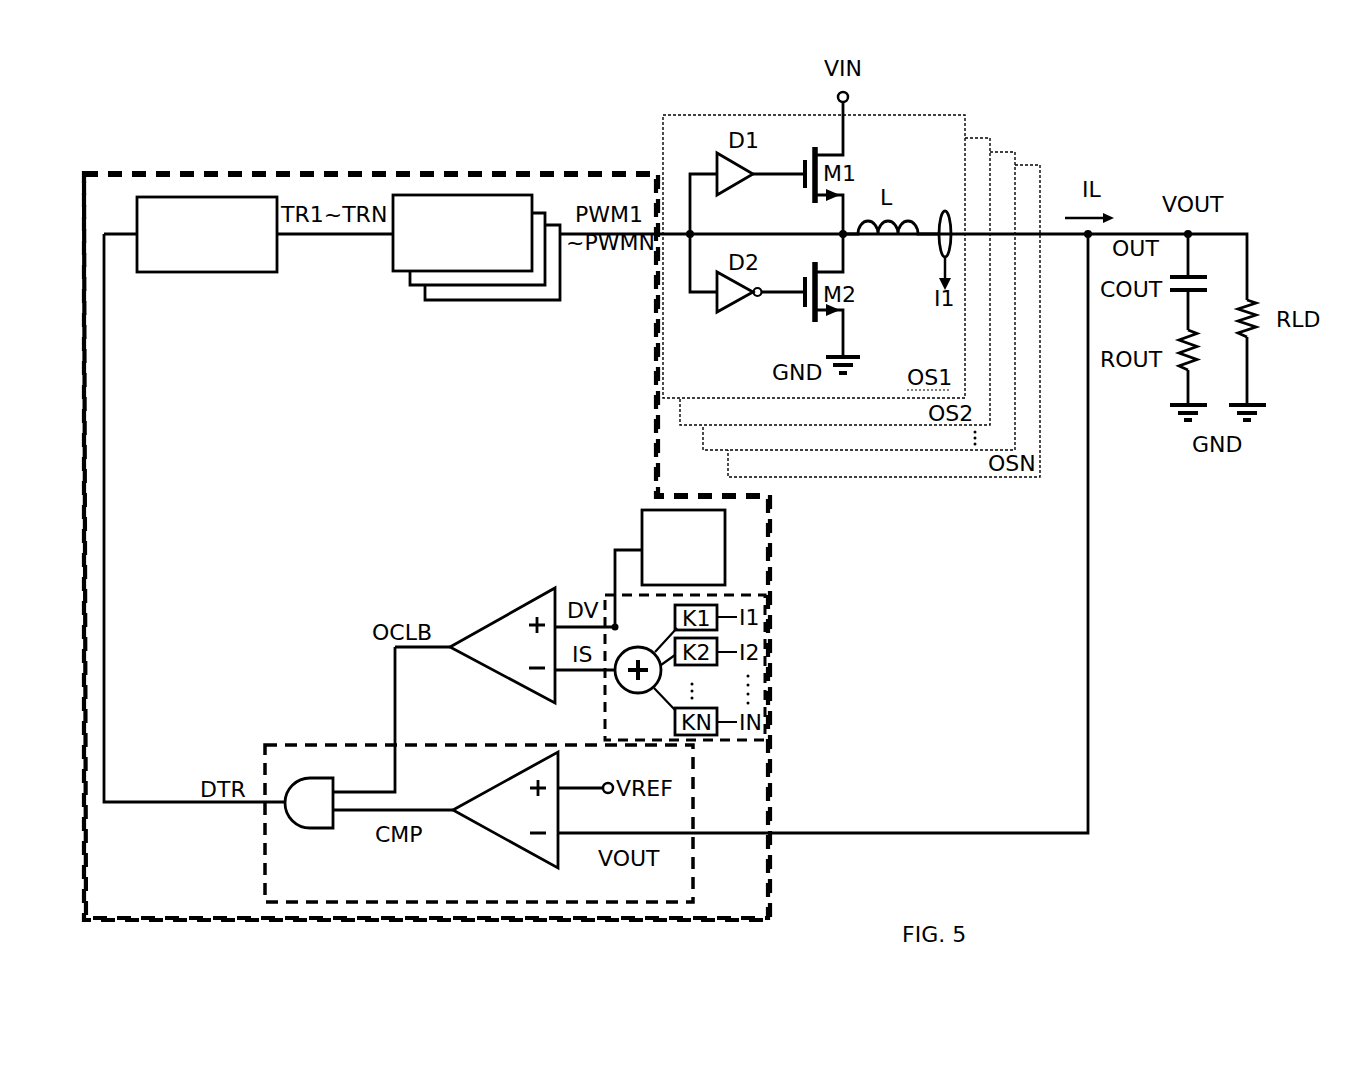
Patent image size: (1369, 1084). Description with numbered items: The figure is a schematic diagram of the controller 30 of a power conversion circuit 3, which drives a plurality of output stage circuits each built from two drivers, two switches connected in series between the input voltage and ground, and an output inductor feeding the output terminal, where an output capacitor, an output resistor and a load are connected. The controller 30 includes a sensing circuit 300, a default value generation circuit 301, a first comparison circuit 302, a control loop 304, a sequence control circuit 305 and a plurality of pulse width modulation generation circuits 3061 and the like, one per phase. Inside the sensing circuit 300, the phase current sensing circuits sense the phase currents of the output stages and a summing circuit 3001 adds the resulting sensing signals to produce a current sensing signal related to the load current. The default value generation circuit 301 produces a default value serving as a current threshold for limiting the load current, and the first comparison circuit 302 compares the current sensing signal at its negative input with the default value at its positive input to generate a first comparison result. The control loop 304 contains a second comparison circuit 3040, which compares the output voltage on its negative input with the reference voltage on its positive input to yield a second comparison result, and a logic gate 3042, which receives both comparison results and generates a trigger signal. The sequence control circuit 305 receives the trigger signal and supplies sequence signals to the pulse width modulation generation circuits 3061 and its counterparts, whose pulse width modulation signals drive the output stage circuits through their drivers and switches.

The power conversion circuit 3 is at (130, 156).
The controller 30 is at (132, 915).
The sequence control circuit 305 is at (228, 248).
The pulse width modulation generation circuit 3061 is at (525, 254).
The default value generation circuit 301 is at (705, 568).
The first comparison circuit 302 is at (527, 665).
The sensing circuit 300 is at (652, 732).
The summing circuit 3001 is at (644, 665).
The control loop 304 is at (321, 898).
The second comparison circuit 3040 is at (535, 823).
The logic gate 3042 is at (315, 790).